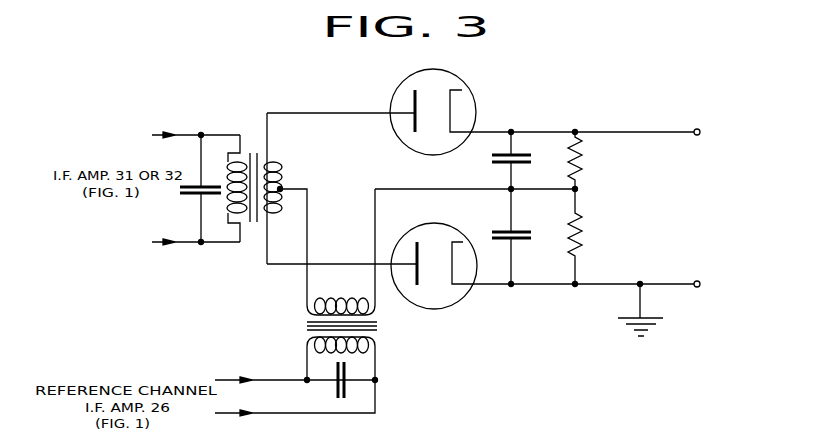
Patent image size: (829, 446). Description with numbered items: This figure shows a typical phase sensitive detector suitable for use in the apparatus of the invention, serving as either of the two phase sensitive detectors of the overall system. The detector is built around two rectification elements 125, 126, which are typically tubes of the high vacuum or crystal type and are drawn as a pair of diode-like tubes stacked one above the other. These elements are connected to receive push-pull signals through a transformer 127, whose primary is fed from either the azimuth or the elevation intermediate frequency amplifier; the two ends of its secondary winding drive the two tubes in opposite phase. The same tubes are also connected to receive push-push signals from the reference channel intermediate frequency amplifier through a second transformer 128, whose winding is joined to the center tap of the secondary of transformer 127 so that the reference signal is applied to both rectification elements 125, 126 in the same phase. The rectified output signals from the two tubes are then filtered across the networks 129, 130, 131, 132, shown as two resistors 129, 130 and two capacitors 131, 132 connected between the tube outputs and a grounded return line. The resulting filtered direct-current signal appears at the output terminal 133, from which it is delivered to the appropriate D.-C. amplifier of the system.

The rectification element 125 is at (477, 92).
The rectification element 126 is at (452, 302).
The transformer 127 is at (253, 152).
The transformer 128 is at (307, 326).
The filter network 129 is at (581, 164).
The filter network 130 is at (582, 242).
The filter network 131 is at (493, 158).
The filter network 132 is at (492, 236).
The output terminal 133 is at (700, 128).